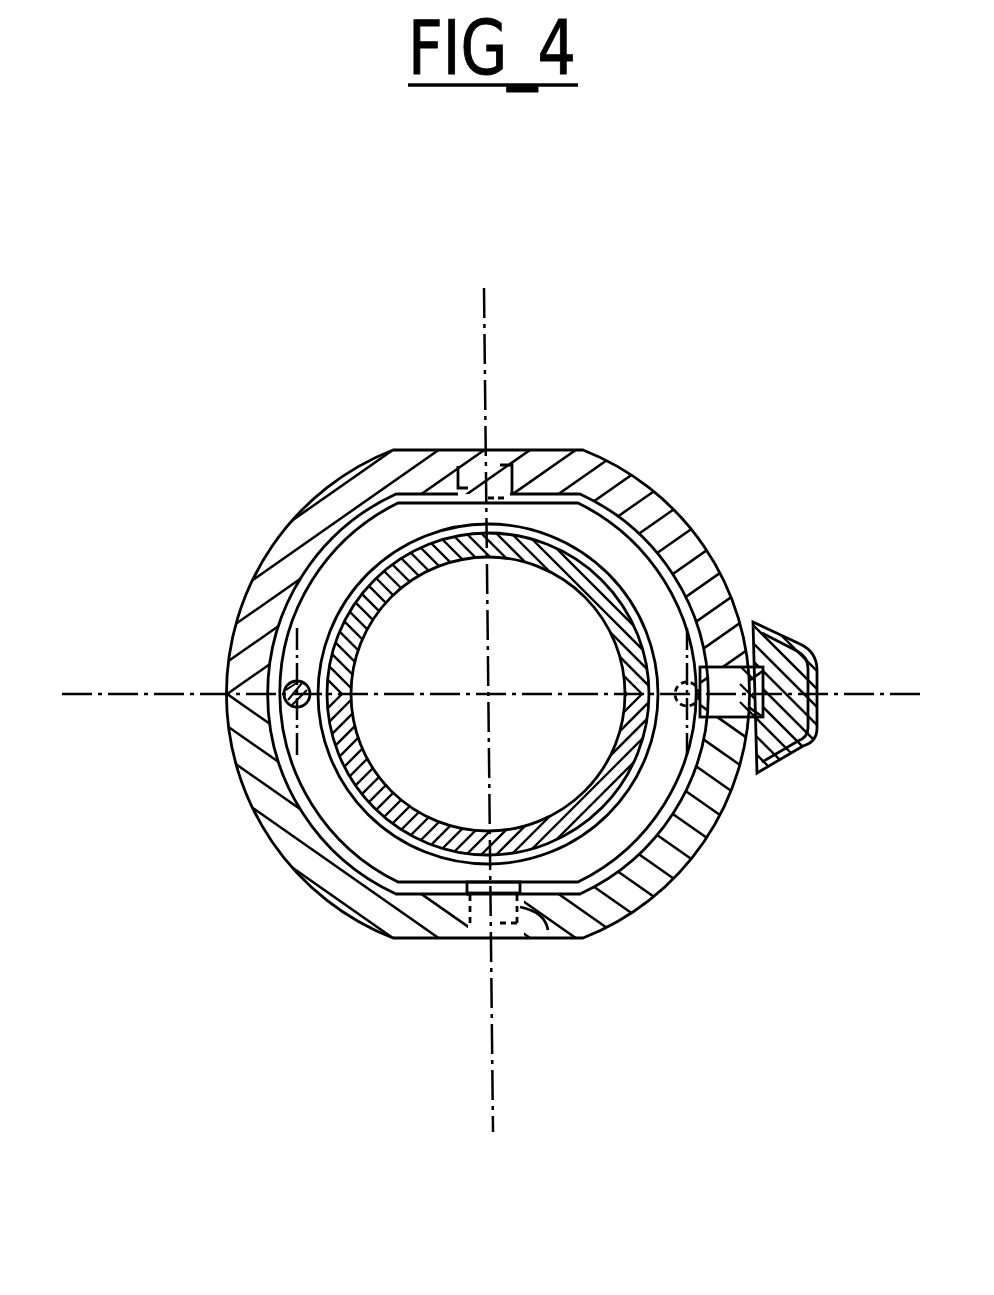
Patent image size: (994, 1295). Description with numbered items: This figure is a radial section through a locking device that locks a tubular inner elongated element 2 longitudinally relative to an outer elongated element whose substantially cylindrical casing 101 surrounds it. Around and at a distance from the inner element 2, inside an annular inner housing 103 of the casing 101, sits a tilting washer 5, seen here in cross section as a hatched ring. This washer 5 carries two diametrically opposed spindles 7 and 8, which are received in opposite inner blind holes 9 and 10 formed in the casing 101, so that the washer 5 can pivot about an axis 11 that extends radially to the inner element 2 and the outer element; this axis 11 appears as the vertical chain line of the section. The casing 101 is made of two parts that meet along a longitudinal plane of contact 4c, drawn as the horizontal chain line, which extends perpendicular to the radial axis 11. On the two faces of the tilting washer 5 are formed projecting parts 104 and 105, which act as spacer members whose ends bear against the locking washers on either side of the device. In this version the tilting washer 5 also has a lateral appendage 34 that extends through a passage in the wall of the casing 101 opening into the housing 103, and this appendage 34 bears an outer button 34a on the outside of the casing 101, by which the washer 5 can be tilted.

The tubular inner elongated element 2 is at (362, 797).
The longitudinal plane of contact 4c is at (130, 692).
The tilting washer 5 is at (640, 818).
The spindle 7 is at (482, 918).
The spindle 8 is at (528, 485).
The inner blind hole 9 is at (521, 912).
The inner blind hole 10 is at (457, 483).
The axis 11 is at (493, 1085).
The lateral appendage 34 is at (742, 662).
The outer button 34a is at (791, 748).
The casing 101 is at (288, 537).
The annular inner housing 103 is at (375, 882).
The projecting part 104 is at (688, 676).
The projecting part 105 is at (289, 706).